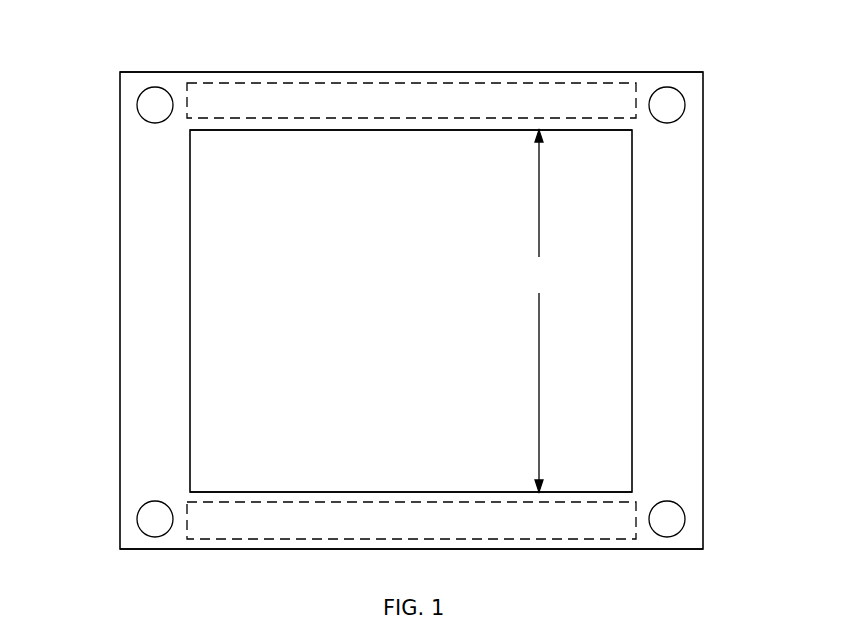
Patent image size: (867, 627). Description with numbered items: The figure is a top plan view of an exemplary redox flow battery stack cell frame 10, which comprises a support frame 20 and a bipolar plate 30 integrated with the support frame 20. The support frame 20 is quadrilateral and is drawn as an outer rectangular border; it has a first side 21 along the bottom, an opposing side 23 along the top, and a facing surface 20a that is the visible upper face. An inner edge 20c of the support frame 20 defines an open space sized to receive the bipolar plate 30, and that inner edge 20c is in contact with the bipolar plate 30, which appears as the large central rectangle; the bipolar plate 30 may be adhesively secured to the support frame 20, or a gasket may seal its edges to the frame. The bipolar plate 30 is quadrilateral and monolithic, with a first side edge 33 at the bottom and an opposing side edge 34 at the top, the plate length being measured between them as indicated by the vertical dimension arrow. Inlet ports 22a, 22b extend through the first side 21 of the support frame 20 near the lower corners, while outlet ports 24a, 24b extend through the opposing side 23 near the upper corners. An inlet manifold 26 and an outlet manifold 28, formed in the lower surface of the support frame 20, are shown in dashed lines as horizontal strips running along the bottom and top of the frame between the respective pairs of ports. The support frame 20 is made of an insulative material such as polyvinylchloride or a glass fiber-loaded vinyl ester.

The redox flow battery stack cell frame 10 is at (401, 32).
The support frame 20 is at (130, 177).
The facing surface 20a is at (153, 315).
The inner edge 20c is at (193, 365).
The first side 21 is at (228, 549).
The opposing side 23 is at (228, 72).
The inlet port 22a is at (150, 523).
The inlet port 22b is at (668, 523).
The outlet port 24a is at (677, 108).
The outlet port 24b is at (145, 105).
The inlet manifold 26 is at (411, 520).
The outlet manifold 28 is at (411, 100).
The bipolar plate 30 is at (617, 298).
The first side edge 33 is at (340, 492).
The opposing side edge 34 is at (302, 130).